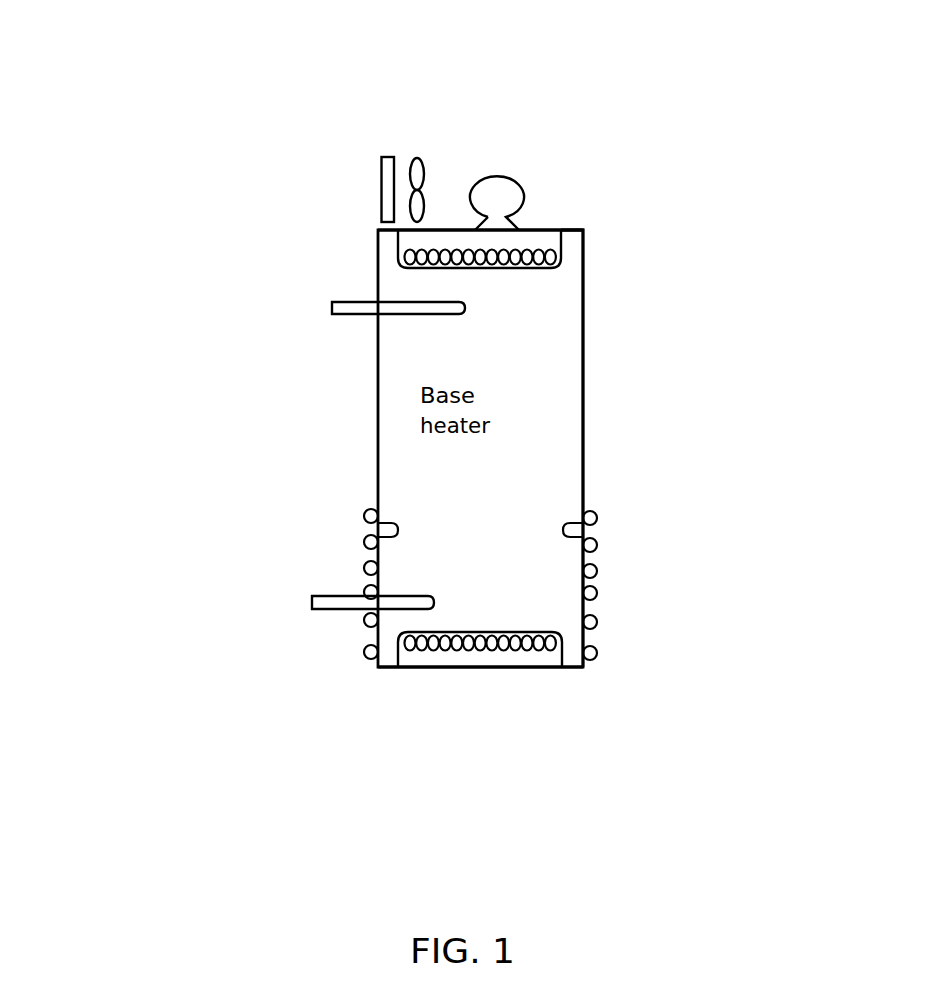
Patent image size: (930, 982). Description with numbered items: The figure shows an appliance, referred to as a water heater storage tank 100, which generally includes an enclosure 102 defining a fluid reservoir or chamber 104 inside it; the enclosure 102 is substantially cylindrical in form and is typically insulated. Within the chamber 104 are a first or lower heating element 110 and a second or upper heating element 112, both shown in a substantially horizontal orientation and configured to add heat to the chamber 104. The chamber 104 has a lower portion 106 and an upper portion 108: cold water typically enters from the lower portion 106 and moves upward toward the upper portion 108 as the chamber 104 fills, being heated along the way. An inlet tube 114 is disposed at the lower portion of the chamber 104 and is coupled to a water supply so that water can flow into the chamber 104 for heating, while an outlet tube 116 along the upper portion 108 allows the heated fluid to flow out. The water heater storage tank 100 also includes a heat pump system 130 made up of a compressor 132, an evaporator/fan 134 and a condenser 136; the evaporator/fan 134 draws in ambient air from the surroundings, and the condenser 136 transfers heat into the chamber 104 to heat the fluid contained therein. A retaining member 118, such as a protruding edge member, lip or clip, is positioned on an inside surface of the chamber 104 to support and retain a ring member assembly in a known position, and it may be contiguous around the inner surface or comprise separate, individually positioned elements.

The water heater storage tank 100 is at (617, 385).
The enclosure 102 is at (573, 257).
The chamber 104 is at (565, 316).
The lower portion 106 is at (378, 667).
The upper portion 108 is at (379, 250).
The lower heating element 110 is at (505, 648).
The upper heating element 112 is at (520, 257).
The inlet tube 114 is at (318, 586).
The outlet tube 116 is at (336, 294).
The retaining member 118 is at (366, 521).
The heat pump system 130 is at (381, 116).
The compressor 132 is at (497, 176).
The evaporator/fan 134 is at (382, 157).
The condenser 136 is at (369, 510).